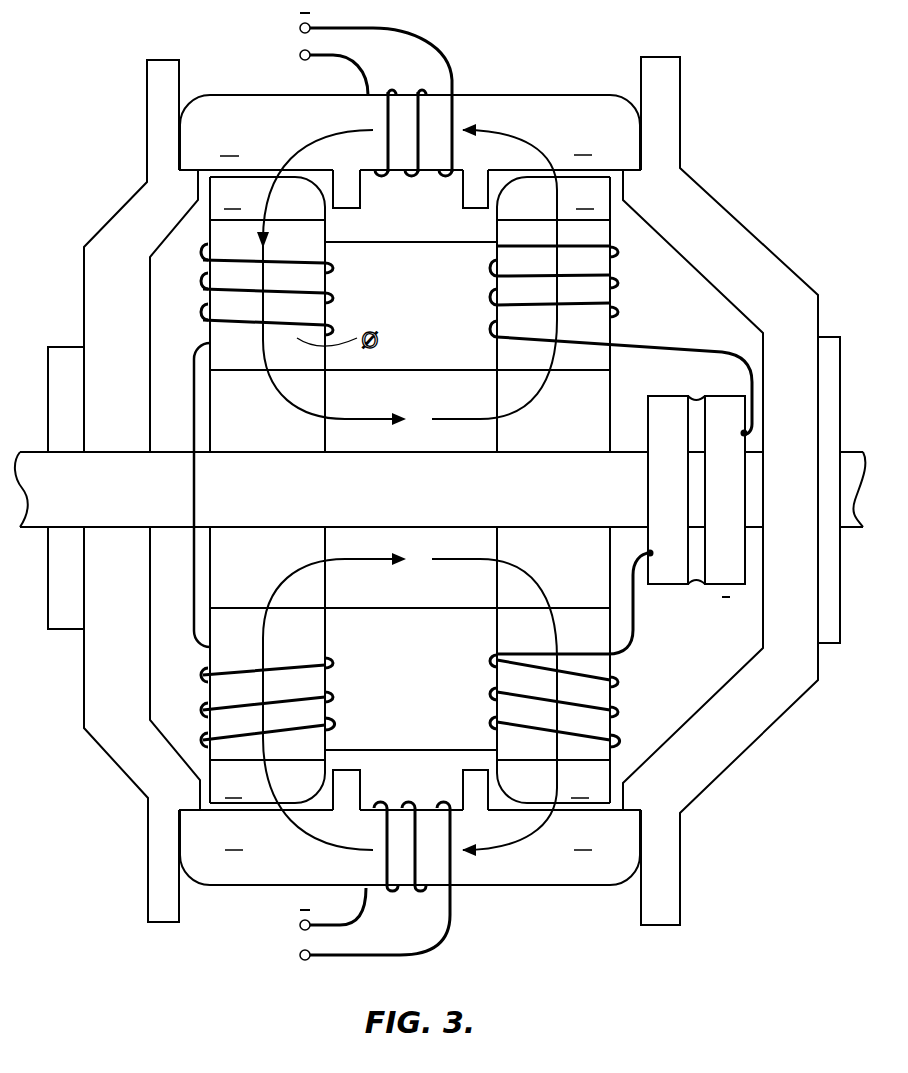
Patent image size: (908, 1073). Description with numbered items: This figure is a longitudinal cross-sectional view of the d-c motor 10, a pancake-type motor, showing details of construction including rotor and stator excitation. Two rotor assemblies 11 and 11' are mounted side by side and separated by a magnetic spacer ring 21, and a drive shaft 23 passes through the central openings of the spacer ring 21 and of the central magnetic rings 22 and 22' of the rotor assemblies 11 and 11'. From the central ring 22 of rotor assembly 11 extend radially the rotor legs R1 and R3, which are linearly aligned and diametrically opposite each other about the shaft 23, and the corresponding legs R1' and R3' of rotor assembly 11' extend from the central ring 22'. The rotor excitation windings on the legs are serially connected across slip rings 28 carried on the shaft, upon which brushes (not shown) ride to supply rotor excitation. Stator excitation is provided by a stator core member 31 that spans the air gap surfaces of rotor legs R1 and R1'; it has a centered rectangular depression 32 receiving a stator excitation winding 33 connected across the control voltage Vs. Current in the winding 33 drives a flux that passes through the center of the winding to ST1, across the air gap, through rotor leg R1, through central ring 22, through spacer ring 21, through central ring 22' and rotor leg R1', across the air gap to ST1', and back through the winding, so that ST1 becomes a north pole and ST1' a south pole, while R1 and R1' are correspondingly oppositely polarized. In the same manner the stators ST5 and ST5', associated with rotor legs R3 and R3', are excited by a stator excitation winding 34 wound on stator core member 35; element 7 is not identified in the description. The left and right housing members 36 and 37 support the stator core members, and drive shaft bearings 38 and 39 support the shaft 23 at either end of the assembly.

The upper left stator magnet segment 7 is at (262, 108).
The d-c motor 10 is at (457, 491).
The rotor assembly 11 is at (204, 483).
The rotor assembly 11' is at (642, 490).
The magnetic spacer ring 21 is at (415, 388).
The central magnetic ring 22 is at (297, 490).
The central magnetic ring 22' is at (524, 490).
The drive shaft 23 is at (388, 470).
The slip rings 28 is at (727, 400).
The stator core member 31 is at (529, 94).
The rectangular depression 32 is at (427, 167).
The stator excitation winding 33 is at (419, 80).
The stator excitation winding 34 is at (402, 803).
The stator core member 35 is at (528, 892).
The left housing member 36 is at (128, 767).
The right housing member 37 is at (748, 743).
The drive shaft bearing 38 is at (65, 630).
The drive shaft bearing 39 is at (866, 457).
The rotor leg R1 is at (291, 274).
The rotor leg R1' is at (529, 275).
The rotor leg R3 is at (294, 688).
The rotor leg R3' is at (526, 688).
The stator ST1' is at (529, 94).
The stator ST5 is at (287, 887).
The stator ST5' is at (528, 892).